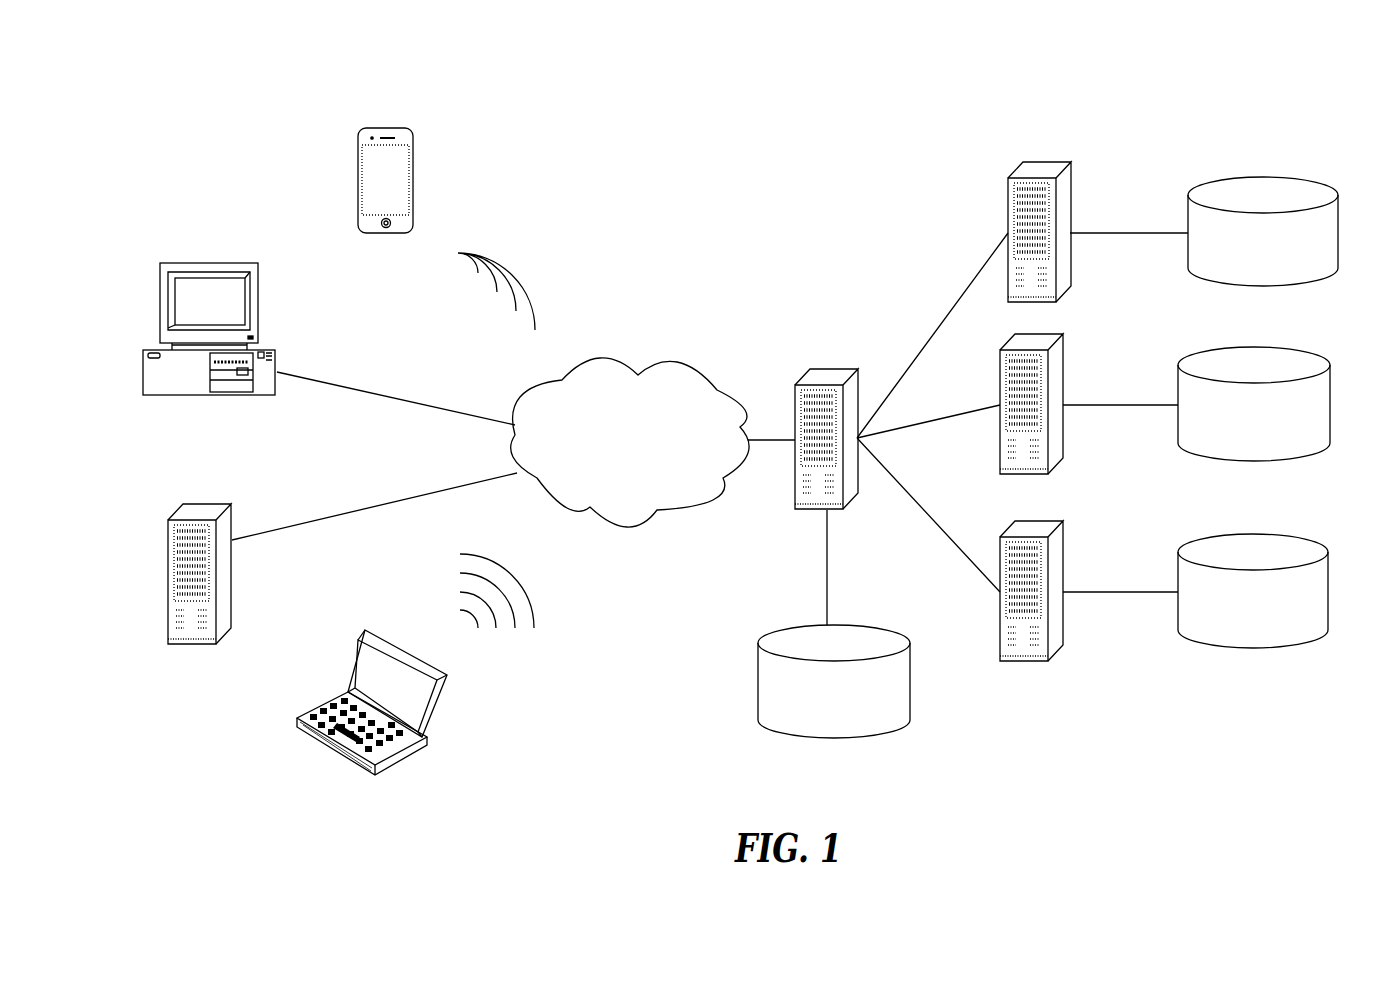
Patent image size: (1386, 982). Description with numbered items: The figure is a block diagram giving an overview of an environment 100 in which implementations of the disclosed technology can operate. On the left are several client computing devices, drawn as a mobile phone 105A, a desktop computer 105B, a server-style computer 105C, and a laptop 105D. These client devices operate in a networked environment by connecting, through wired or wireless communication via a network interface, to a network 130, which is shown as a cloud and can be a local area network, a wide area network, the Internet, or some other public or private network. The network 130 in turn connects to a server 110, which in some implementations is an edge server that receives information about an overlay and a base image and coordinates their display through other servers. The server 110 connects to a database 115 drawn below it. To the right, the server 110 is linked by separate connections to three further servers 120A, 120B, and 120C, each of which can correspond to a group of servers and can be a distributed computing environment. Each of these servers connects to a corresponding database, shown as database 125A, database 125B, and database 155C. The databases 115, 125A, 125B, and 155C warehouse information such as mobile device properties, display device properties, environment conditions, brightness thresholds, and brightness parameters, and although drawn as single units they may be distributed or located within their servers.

The environment 100 is at (820, 135).
The client computing device 105A is at (402, 127).
The client computing device 105B is at (253, 263).
The client computing device 105C is at (223, 502).
The client computing device 105D is at (443, 705).
The server 110 is at (837, 368).
The database 115 is at (887, 630).
The server 120A is at (1072, 162).
The server 120B is at (1062, 333).
The server 120C is at (1062, 520).
The database 125A is at (1258, 173).
The database 125B is at (1253, 343).
The network 130 is at (695, 358).
The database 155C is at (1253, 535).